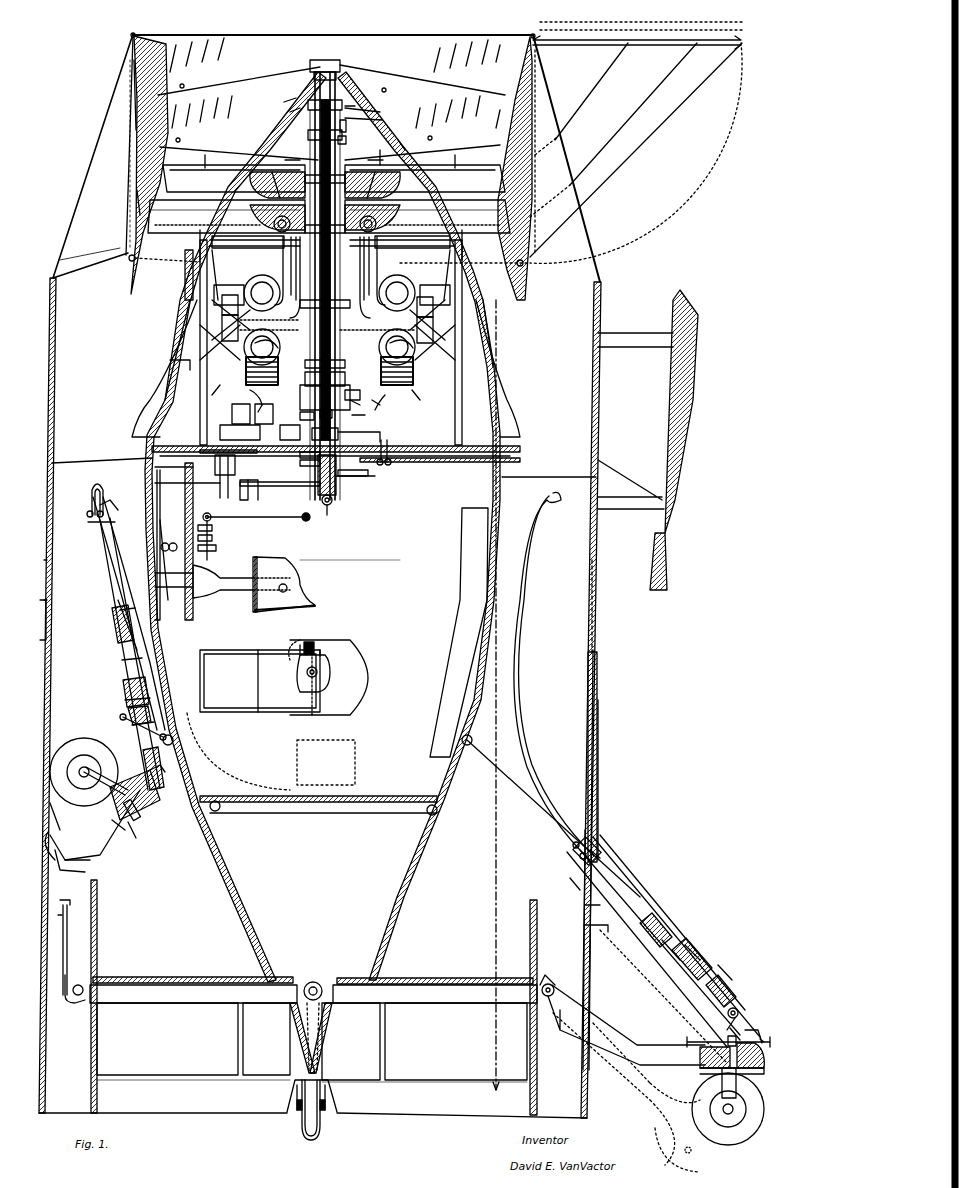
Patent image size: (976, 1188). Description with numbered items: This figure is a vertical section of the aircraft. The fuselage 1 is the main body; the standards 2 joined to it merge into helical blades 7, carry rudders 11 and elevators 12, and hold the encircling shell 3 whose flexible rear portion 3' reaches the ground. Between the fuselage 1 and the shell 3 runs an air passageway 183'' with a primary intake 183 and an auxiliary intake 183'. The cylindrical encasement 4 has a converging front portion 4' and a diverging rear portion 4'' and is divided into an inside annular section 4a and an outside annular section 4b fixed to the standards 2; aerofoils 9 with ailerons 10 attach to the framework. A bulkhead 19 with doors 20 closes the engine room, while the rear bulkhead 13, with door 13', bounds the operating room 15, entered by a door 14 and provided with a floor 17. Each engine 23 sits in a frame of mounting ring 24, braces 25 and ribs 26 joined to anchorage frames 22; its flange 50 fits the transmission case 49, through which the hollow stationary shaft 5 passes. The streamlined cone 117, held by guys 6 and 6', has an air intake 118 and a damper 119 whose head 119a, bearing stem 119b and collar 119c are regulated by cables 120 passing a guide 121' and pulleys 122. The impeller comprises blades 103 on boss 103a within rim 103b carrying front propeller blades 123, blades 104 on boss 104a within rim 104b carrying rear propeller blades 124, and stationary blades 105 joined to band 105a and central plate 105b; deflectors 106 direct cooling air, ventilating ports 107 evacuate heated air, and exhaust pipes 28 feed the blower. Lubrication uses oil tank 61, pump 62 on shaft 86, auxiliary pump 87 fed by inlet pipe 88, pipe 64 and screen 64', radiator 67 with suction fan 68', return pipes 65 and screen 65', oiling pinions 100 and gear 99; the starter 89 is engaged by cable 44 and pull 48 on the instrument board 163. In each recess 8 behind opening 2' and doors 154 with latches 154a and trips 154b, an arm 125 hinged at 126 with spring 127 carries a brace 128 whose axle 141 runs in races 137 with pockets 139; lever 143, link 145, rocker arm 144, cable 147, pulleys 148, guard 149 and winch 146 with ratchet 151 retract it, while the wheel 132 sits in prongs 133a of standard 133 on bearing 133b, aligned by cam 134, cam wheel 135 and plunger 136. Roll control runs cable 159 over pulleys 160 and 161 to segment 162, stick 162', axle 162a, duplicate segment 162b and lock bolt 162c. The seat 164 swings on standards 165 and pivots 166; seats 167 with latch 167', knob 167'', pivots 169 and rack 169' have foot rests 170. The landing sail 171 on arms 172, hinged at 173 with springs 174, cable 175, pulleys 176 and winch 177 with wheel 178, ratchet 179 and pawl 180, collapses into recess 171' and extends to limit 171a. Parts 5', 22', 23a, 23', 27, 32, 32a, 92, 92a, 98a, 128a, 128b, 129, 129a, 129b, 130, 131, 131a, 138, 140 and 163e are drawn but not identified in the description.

The fuselage 1 is at (222, 870).
The standards 2 is at (334, 714).
The opening 2' is at (582, 757).
The encircling shell 3 is at (322, 606).
The rear portion of shell 3' is at (312, 1090).
The cylindrical encasement 4 is at (319, 168).
The converging front portion 4' is at (122, 95).
The diverging rear portion 4'' is at (121, 202).
The inside annular section 4a is at (176, 138).
The outside annular section 4b is at (136, 188).
The stationary shaft 5 is at (323, 286).
The shaft cap 5' is at (318, 71).
The guys 6 is at (362, 586).
The guys 6' is at (353, 149).
The helical blades 7 is at (410, 268).
The recess 8 is at (320, 698).
The aerofoils 9 is at (668, 410).
The ailerons 10 is at (665, 546).
The rudders 11 is at (312, 1041).
The elevators 12 is at (316, 980).
The bulkhead 13 is at (318, 795).
The door 13' is at (323, 798).
The door 14 is at (459, 632).
The operating room 15 is at (351, 576).
The floor 17 is at (190, 640).
The bulkhead 19 is at (445, 444).
The doors 20 is at (266, 432).
The engine anchorage frames 22 is at (311, 311).
The cowling brace 22' is at (314, 396).
The engine 23 is at (329, 328).
The cylinder head 23a is at (316, 357).
The cylinder coil 23' is at (323, 378).
The mounting ring 24 is at (330, 306).
The braces 25 is at (332, 288).
The ribs 26 is at (450, 340).
The section line 27 is at (733, 1042).
The exhaust pipe 28 is at (555, 858).
The skid 32 is at (304, 1118).
The skid bracket 32a is at (324, 1110).
The operating cable 44 is at (358, 437).
The pull 48 is at (395, 458).
The transmission case 49 is at (293, 268).
The flange 50 is at (327, 302).
The oil tank 61 is at (361, 420).
The oil pump 62 is at (325, 373).
The pipe 64 is at (228, 450).
The oil screen 64' is at (243, 427).
The pipes 65 is at (239, 415).
The oil screen 65' is at (264, 413).
The cooling radiator 67 is at (325, 397).
The suction fan 68' is at (353, 400).
The oil pump shaft 86 is at (312, 419).
The auxiliary oil pump 87 is at (325, 436).
The oil inlet pipe 88 is at (280, 494).
The starter 89 is at (359, 408).
The exhaust pipe 92 is at (315, 400).
The exhaust pipe 92a is at (246, 412).
The fitting 98a is at (384, 408).
The driven shaft gear 99 is at (292, 298).
The engine pinions 100 is at (377, 277).
The impeller blades 103 is at (326, 185).
The boss 103a is at (330, 183).
The streamlined rim 103b is at (334, 178).
The impeller blades 104 is at (455, 207).
The boss 104a is at (324, 219).
The encircling rim 104b is at (329, 216).
The stationary impeller blades 105 is at (400, 244).
The band 105a is at (331, 274).
The annular central plate 105b is at (331, 241).
The deflectors 106 is at (410, 372).
The ventilating ports 107 is at (500, 418).
The streamlined cone 117 is at (400, 142).
The air intake 118 is at (288, 116).
The intake damper 119 is at (283, 104).
The damper head 119a is at (380, 112).
The bearing stem 119b is at (382, 120).
The collar 119c is at (345, 126).
The cables 120 is at (330, 416).
The guide 121' is at (348, 62).
The pulleys 122 is at (325, 492).
The front propeller blades 123 is at (328, 181).
The rear propeller blades 124 is at (327, 222).
The landing wheel arm 125 is at (72, 865).
The hinge 126 is at (552, 992).
The spring 127 is at (548, 984).
The extension brace 128 is at (650, 898).
The strut part 128a is at (125, 664).
The strut part 128b is at (130, 705).
The strut end 129 is at (762, 1014).
The strut part 129a is at (132, 720).
The strut part 129b is at (126, 676).
The spring 130 is at (126, 690).
The sleeve 131 is at (118, 630).
The sleeve end 131a is at (381, 760).
The landing wheel 132 is at (762, 1090).
The supporting standard 133 is at (766, 1056).
The prongs 133a is at (745, 1080).
The bearing 133b is at (764, 1068).
The returning cam 134 is at (760, 1032).
The cam wheel 135 is at (716, 1040).
The thrust plunger and spring 136 is at (712, 1036).
The races 137 is at (528, 770).
The eye 138 is at (90, 490).
The pocket 139 is at (580, 862).
The rod 140 is at (90, 868).
The axle 141 is at (572, 856).
The lever 143 is at (578, 836).
The rocker arm 144 is at (740, 1000).
The operating link 145 is at (410, 817).
The operating winch 146 is at (240, 476).
The cable 147 is at (530, 842).
The guide pulleys 148 is at (215, 716).
The guard 149 is at (568, 884).
The ratchet 151 is at (232, 490).
The doors 154 is at (60, 735).
The spring latches 154a is at (590, 910).
The latch trips 154b is at (592, 935).
The operating cable 159 is at (160, 400).
The pulleys 160 is at (329, 435).
The pulleys 161 is at (185, 340).
The control segment 162 is at (256, 540).
The stick 162' is at (263, 540).
The segment axle 162a is at (238, 493).
The duplicate segment 162b is at (227, 547).
The lock bolt 162c is at (226, 537).
The instrument board 163 is at (440, 466).
The guide 163e is at (227, 527).
The operator's seat 164 is at (285, 565).
The standards 165 is at (220, 585).
The pivots 166 is at (274, 592).
The seat 167 is at (260, 681).
The latch 167' is at (329, 668).
The emergency knob 167'' is at (295, 668).
The pivots 169 is at (299, 673).
The rack 169' is at (316, 677).
The foot rests 170 is at (215, 685).
The landing sail 171 is at (333, 152).
The circumferential recess 171' is at (330, 155).
The extension limit 171a is at (700, 14).
The arms 172 is at (645, 44).
The hinges 173 is at (533, 34).
The springs 174 is at (580, 126).
The operating cable 175 is at (655, 124).
The pulleys 176 is at (462, 275).
The operating winch 177 is at (300, 453).
The wheel 178 is at (375, 476).
The ratchet 179 is at (300, 462).
The pawl 180 is at (348, 476).
The primary intake 183 is at (333, 25).
The auxiliary intake 183' is at (326, 165).
The air passageway 183'' is at (324, 442).